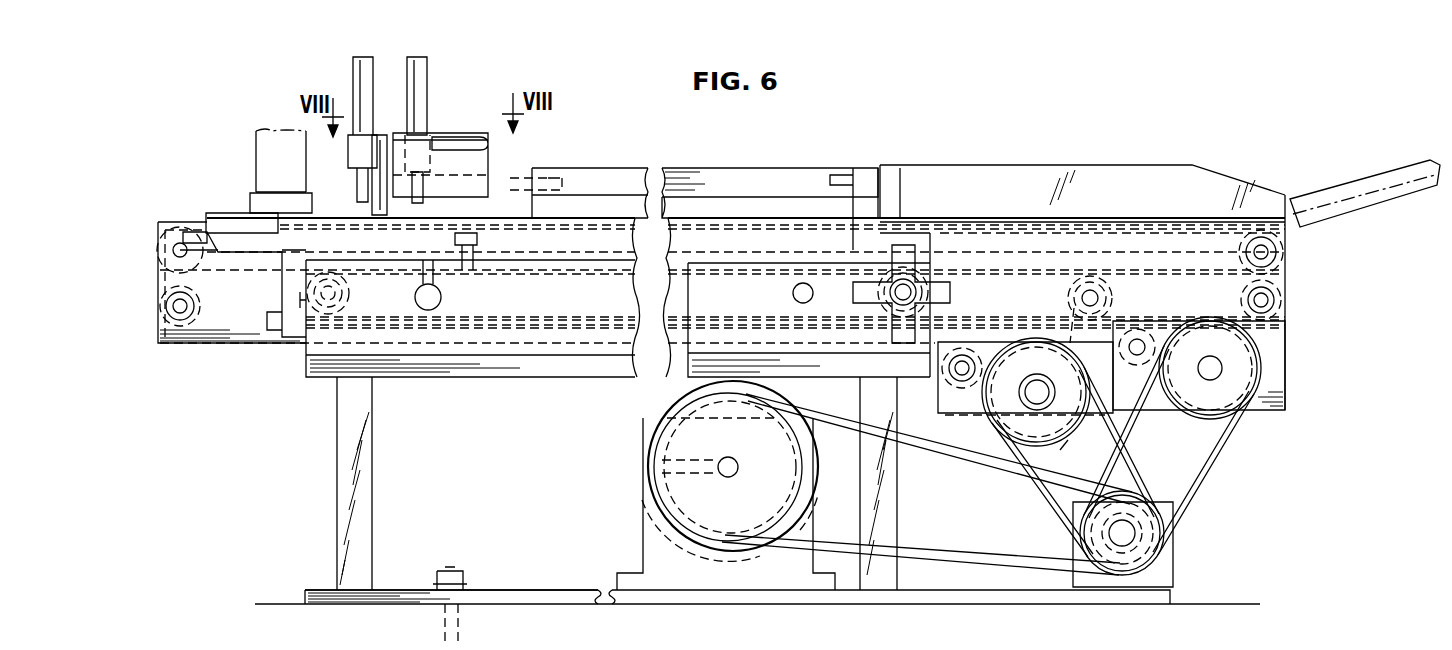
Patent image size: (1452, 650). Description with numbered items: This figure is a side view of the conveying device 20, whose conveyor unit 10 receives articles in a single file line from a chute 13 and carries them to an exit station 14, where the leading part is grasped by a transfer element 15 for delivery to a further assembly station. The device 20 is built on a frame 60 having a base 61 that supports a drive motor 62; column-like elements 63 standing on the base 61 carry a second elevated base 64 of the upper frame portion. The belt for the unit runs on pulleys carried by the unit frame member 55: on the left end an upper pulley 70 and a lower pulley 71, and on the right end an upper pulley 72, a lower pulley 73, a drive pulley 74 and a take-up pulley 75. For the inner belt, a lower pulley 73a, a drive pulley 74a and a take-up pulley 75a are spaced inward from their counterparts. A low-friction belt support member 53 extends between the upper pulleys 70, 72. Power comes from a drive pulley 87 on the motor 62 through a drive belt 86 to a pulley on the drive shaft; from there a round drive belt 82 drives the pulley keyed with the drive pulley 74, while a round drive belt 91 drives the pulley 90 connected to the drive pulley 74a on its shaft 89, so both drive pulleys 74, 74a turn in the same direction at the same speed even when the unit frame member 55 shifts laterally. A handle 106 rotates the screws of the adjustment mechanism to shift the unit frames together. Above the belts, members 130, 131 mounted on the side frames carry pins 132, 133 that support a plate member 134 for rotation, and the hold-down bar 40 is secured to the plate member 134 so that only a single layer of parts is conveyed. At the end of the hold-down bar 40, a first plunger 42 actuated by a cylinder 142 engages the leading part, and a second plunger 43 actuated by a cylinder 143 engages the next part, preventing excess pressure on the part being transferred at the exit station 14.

The conveyor unit 10 is at (1287, 281).
The chute 13 is at (1357, 194).
The exit station 14 is at (248, 214).
The transfer element 15 is at (255, 154).
The device 20 is at (1106, 166).
The hold-down bar 40 is at (1000, 199).
The first plunger 42 is at (360, 192).
The second plunger 43 is at (420, 197).
The belt support member 53 is at (1137, 243).
The unit frame member 55 is at (233, 338).
The frame 60 is at (336, 506).
The base 61 is at (554, 585).
The drive motor 62 is at (662, 407).
The column-like elements 63 is at (367, 485).
The second elevated base 64 is at (433, 370).
The upper pulley 70 is at (158, 240).
The lower pulley 71 is at (182, 320).
The upper pulley 72 is at (1292, 262).
The lower pulley 73 is at (1280, 321).
The lower pulley 73a is at (1108, 297).
The drive pulley 74 is at (1262, 368).
The drive pulley 74a is at (1073, 436).
The take-up pulley 75 is at (1128, 366).
The take-up pulley 75a is at (954, 390).
The drive belt 82 is at (1225, 460).
The drive belt 86 is at (973, 554).
The drive pulley 87 is at (780, 487).
The shaft 89 is at (1041, 380).
The pulley 90 is at (1003, 410).
The drive belt 91 is at (1050, 515).
The handle 106 is at (948, 292).
The member 130 is at (493, 245).
The member 131 is at (855, 260).
The pin 132 is at (558, 167).
The pin 133 is at (844, 176).
The plate member 134 is at (749, 180).
The cylinder 142 is at (352, 99).
The cylinder 143 is at (428, 110).